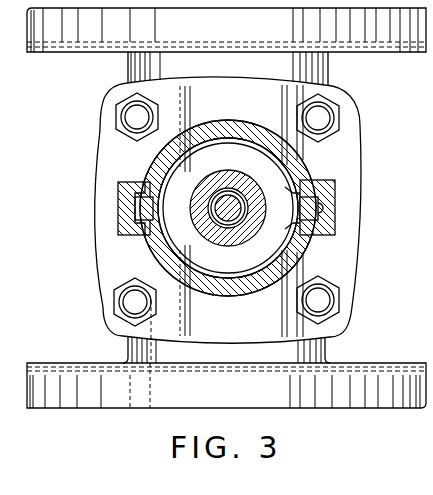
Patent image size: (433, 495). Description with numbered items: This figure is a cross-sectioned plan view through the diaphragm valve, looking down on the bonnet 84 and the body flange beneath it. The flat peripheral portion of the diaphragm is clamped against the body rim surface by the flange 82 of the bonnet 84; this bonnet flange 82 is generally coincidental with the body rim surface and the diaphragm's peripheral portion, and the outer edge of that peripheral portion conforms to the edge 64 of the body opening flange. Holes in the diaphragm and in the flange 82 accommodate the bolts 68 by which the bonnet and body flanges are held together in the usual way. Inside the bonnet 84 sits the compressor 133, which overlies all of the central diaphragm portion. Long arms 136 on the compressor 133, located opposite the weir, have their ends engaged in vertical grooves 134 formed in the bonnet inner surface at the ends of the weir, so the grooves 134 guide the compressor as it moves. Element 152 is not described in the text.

The edge 64 is at (358, 155).
The bolts 68 is at (338, 305).
The flange 82 is at (117, 160).
The bonnet 84 is at (312, 258).
The compressor 133 is at (273, 190).
The vertical grooves 134 is at (340, 78).
The long arms 136 is at (140, 209).
The neck 152 is at (127, 347).